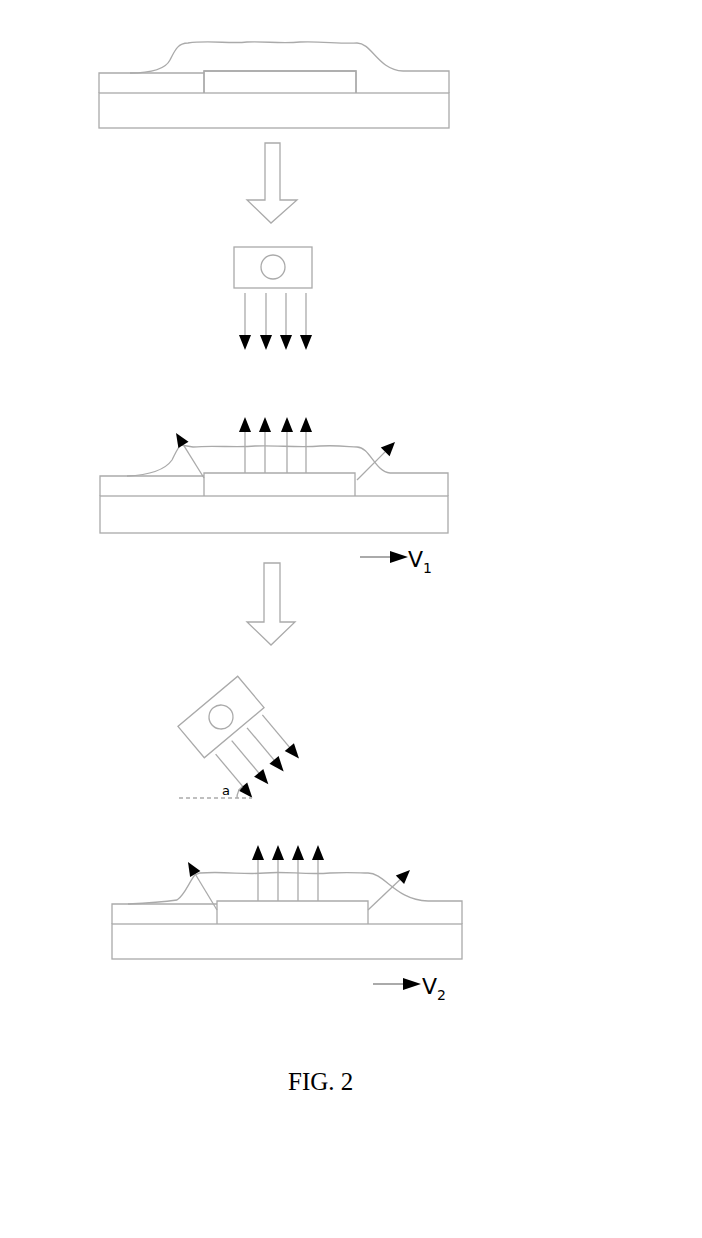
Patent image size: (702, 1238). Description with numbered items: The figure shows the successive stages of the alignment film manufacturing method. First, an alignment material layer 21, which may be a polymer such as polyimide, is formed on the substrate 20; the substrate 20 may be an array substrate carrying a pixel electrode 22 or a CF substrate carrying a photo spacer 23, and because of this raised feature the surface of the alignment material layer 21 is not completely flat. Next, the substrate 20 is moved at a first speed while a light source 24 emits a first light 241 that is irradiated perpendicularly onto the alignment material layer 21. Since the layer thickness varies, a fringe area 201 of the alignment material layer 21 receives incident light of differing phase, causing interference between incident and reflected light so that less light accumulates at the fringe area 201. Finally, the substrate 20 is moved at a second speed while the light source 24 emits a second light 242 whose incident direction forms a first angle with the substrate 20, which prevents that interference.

The substrate 20 is at (449, 110).
The alignment material layer 21 is at (403, 71).
The pixel electrode 22 is at (203, 80).
The photo spacer 23 is at (254, 54).
The light source 24 is at (312, 267).
The first light 241 is at (312, 325).
The second light 242 is at (305, 738).
The fringe area 201 is at (160, 462).